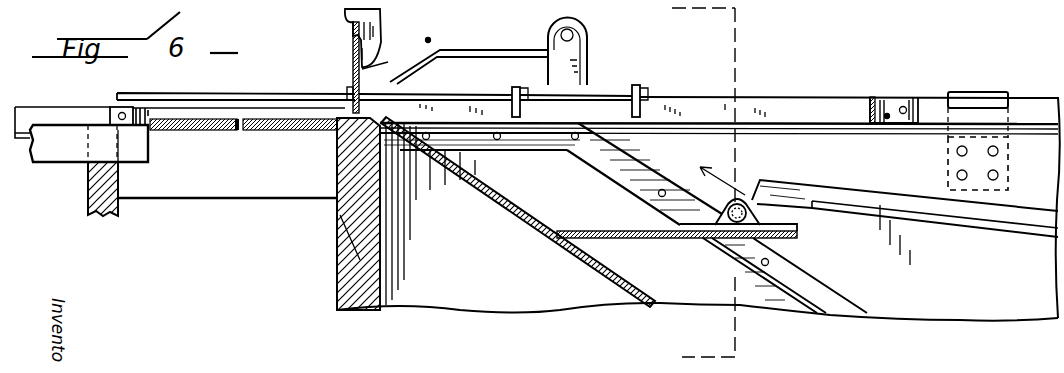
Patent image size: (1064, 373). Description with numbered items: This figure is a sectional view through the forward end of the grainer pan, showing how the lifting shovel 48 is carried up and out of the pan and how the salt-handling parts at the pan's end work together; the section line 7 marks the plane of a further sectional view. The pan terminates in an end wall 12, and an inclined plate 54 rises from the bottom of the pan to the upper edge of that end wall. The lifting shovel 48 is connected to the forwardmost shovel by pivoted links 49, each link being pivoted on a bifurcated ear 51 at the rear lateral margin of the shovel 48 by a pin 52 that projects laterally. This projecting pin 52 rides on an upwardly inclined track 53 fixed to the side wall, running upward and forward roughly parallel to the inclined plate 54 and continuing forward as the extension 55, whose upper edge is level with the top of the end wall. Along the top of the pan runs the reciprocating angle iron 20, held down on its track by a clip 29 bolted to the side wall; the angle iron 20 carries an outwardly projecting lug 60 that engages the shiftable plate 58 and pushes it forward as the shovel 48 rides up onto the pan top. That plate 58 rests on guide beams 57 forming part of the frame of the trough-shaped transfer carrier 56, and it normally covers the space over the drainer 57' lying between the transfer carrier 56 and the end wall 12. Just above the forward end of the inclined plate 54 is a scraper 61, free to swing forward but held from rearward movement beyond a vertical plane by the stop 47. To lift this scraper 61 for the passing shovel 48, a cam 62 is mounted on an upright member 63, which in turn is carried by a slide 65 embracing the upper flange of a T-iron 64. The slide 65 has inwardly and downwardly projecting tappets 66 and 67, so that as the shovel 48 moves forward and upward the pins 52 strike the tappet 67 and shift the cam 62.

The section line 7 is at (691, 182).
The end wall 12 is at (337, 277).
The angle iron 20 is at (812, 102).
The clip 29 is at (992, 85).
The stop 47 is at (428, 42).
The lifting shovel 48 is at (597, 231).
The pivoted link 49 is at (1000, 218).
The ear 51 is at (770, 218).
The pin 52 is at (745, 204).
The inclined track 53 is at (836, 285).
The inclined plate 54 is at (512, 216).
The forward track extension 55 is at (462, 132).
The transfer carrier 56 is at (98, 213).
The guide beam 57 is at (227, 181).
The drainer 57' is at (290, 141).
The shiftable plate 58 is at (236, 131).
The lug 60 is at (134, 107).
The scraper 61 is at (350, 60).
The cam 62 is at (518, 50).
The upright member 63 is at (586, 66).
The T-iron 64 is at (280, 97).
The slide 65 is at (623, 88).
The tappet 66 is at (648, 110).
The tappet 67 is at (522, 108).